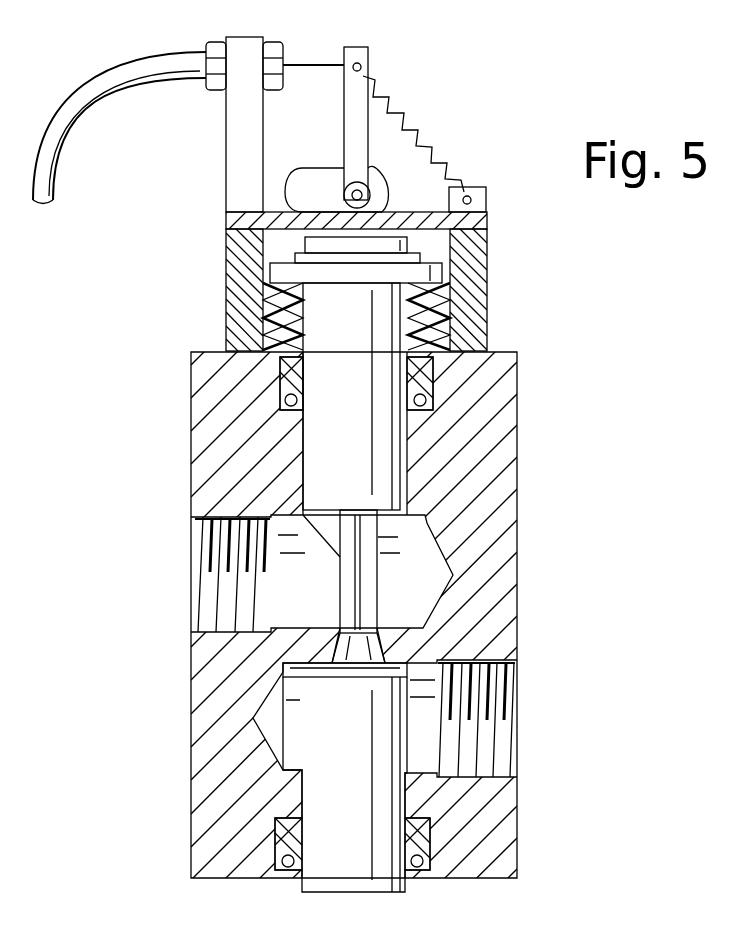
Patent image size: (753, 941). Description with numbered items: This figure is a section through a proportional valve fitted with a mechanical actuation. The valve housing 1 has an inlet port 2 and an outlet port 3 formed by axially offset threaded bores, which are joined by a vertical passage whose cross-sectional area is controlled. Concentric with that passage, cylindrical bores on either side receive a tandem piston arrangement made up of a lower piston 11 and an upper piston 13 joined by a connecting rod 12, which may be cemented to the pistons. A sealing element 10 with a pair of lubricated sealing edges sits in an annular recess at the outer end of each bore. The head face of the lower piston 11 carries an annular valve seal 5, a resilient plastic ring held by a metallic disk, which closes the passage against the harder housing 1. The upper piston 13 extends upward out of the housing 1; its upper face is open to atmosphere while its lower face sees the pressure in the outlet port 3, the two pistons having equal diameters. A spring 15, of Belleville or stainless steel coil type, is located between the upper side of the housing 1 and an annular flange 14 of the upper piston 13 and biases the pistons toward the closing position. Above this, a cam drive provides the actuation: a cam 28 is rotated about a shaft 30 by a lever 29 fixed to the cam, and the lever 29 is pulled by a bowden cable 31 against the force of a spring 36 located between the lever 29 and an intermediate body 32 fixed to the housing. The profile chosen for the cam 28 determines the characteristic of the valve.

The valve housing 1 is at (486, 447).
The inlet port 2 is at (488, 698).
The outlet port 3 is at (195, 542).
The valve seal 5 is at (400, 663).
The sealing element 10 is at (432, 385).
The lower piston 11 is at (380, 868).
The connecting rod 12 is at (347, 588).
The upper piston 13 is at (388, 483).
The annular flange 14 is at (278, 273).
The spring 15 is at (450, 323).
The cam 28 is at (285, 190).
The lever 29 is at (344, 115).
The shaft 30 is at (368, 192).
The bowden cable 31 is at (106, 83).
The intermediate body 32 is at (485, 252).
The spring 36 is at (433, 137).